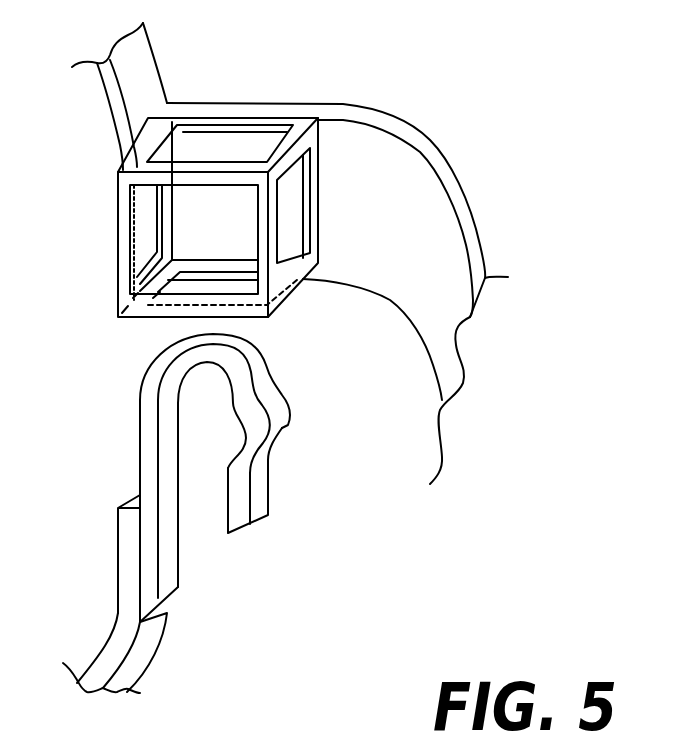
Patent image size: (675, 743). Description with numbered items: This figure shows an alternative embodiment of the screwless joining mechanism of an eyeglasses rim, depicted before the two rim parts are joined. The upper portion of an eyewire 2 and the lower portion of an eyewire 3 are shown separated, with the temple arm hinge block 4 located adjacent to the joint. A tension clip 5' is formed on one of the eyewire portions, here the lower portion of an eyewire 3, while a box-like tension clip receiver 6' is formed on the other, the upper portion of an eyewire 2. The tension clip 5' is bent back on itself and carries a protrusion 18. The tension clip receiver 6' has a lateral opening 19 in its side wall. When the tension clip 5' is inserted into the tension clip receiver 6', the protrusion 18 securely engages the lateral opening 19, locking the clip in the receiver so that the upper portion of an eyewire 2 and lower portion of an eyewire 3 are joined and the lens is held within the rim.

The upper portion of an eyewire 2 is at (143, 72).
The lower portion of an eyewire 3 is at (147, 648).
The temple arm hinge block 4 is at (442, 246).
The tension clip 5' is at (160, 476).
The tension clip receiver 6' is at (177, 217).
The protrusion 18 is at (283, 428).
The lateral opening 19 is at (288, 227).